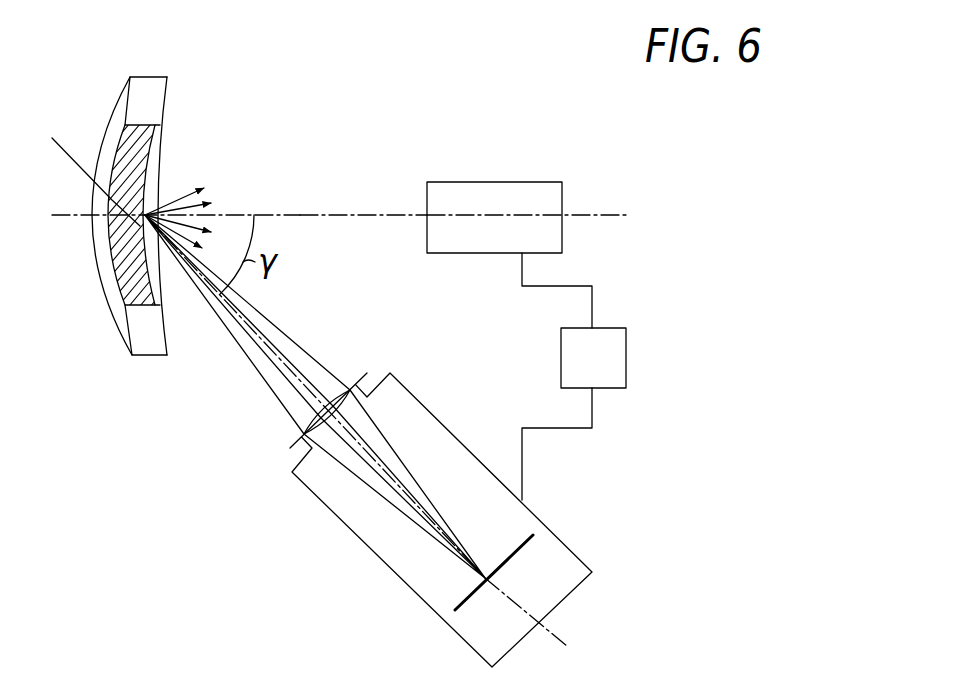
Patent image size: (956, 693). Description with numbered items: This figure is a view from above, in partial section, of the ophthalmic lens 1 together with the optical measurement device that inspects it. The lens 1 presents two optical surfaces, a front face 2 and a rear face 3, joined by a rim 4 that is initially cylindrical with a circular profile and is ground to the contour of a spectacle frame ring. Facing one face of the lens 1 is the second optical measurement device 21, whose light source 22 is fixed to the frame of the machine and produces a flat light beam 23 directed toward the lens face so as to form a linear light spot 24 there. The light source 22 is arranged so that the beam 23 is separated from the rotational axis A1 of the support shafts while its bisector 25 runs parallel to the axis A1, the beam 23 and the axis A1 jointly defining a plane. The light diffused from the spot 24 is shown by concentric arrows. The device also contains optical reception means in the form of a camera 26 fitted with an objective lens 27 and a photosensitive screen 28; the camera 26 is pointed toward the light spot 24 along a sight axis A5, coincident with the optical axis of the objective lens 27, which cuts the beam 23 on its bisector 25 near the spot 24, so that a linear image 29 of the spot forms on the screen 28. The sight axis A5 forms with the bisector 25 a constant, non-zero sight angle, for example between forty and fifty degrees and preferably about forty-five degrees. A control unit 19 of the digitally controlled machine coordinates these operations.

The ophthalmic lens 1 is at (120, 206).
The front face 2 is at (110, 117).
The rear face 3 is at (156, 133).
The rim 4 is at (150, 82).
The control unit 19 is at (574, 414).
The second optical measurement device 21 is at (509, 215).
The light source 22 is at (537, 190).
The light beam 23 is at (298, 214).
The light spot 24 is at (158, 200).
The bisector 25 is at (217, 200).
The camera 26 is at (350, 532).
The objective lens 27 is at (350, 386).
The photosensitive screen 28 is at (534, 541).
The linear image 29 is at (481, 578).
The rotational axis A1 is at (598, 217).
The sight axis A5 is at (252, 342).